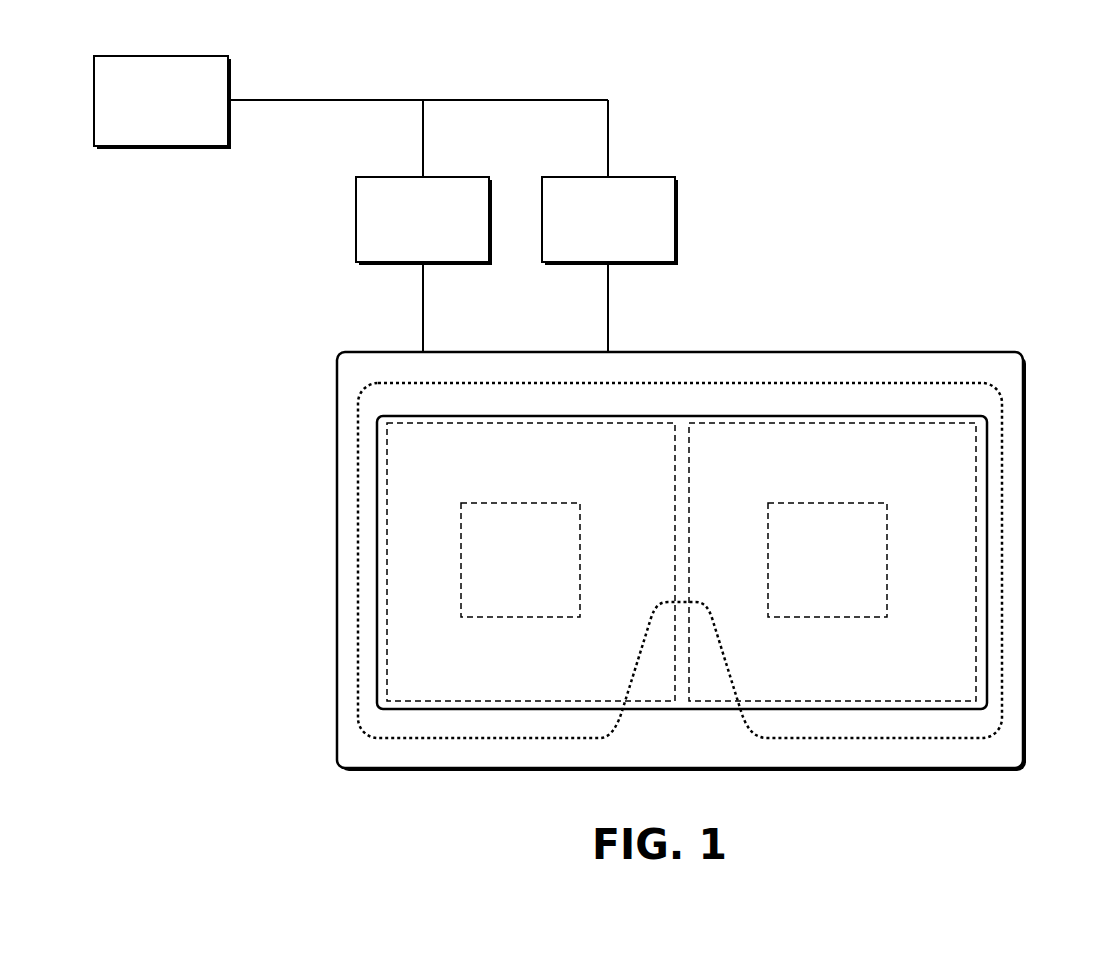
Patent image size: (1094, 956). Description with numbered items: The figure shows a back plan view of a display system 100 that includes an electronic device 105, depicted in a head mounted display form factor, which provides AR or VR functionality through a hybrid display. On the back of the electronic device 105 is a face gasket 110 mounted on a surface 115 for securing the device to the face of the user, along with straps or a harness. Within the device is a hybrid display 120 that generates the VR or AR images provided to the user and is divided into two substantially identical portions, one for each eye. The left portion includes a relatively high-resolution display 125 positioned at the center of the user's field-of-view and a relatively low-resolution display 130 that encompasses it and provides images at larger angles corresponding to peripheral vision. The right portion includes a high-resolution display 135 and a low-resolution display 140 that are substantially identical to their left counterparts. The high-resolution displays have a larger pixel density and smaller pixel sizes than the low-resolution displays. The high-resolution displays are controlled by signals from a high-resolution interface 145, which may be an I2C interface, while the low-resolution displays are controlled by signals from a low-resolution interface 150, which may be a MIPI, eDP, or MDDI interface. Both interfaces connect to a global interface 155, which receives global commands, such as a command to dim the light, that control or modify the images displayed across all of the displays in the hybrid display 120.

The display system 100 is at (1004, 87).
The electronic device 105 is at (830, 350).
The face gasket 110 is at (560, 741).
The surface 115 is at (401, 755).
The hybrid display 120 is at (732, 413).
The high-resolution display 125 is at (558, 604).
The low-resolution display 130 is at (650, 692).
The high-resolution display 135 is at (795, 604).
The low-resolution display 140 is at (718, 692).
The high-resolution interface 145 is at (424, 221).
The low-resolution interface 150 is at (610, 221).
The global interface 155 is at (162, 102).